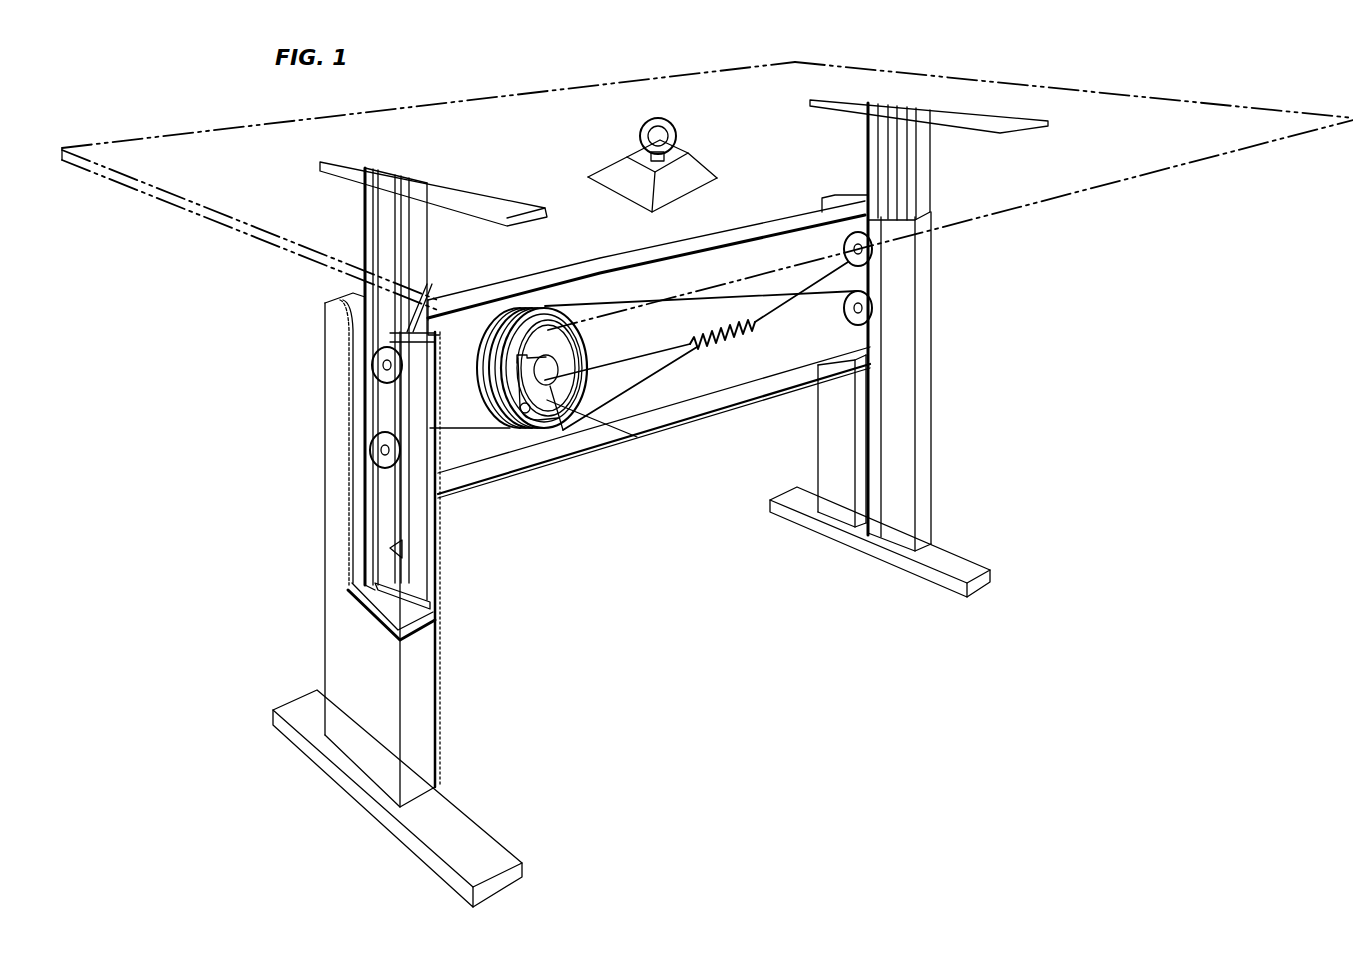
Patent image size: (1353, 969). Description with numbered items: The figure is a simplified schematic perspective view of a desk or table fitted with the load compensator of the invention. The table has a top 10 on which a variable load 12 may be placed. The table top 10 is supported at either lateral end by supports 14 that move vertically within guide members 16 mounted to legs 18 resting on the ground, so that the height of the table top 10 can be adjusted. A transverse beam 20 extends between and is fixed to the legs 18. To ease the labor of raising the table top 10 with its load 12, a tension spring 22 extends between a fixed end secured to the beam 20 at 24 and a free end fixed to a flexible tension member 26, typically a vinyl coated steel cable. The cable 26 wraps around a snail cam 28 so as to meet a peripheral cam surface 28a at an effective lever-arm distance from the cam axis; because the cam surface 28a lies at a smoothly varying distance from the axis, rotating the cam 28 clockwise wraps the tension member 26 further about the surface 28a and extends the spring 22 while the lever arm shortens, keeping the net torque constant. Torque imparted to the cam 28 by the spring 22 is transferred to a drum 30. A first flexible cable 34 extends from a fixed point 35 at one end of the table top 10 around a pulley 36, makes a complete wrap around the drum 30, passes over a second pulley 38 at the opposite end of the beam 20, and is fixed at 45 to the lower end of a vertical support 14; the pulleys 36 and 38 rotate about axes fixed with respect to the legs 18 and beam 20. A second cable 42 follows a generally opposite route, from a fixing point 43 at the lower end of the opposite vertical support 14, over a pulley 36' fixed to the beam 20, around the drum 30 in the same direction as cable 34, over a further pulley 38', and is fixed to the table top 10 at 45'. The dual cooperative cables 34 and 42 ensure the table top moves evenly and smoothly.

The table top 10 is at (188, 150).
The variable load 12 is at (690, 173).
The support 14 is at (365, 212).
The guide member 16 is at (423, 300).
The leg 18 is at (325, 415).
The transverse beam 20 is at (707, 400).
The tension spring 22 is at (743, 342).
The fixed end securing point 24 is at (775, 318).
The flexible tension member 26 is at (650, 353).
The snail cam 28 is at (550, 403).
The peripheral cam surface 28a is at (637, 437).
The drum 30 is at (538, 427).
The first flexible cable 34 is at (456, 350).
The fixed point 35 is at (368, 175).
The pulley 36 is at (340, 366).
The pulley 36' is at (336, 462).
The second pulley 38 is at (906, 305).
The further pulley 38' is at (816, 222).
The second cable 42 is at (477, 427).
The fixing point 43 is at (348, 592).
The fixing point 45 is at (823, 441).
The fixing point 45' is at (929, 125).